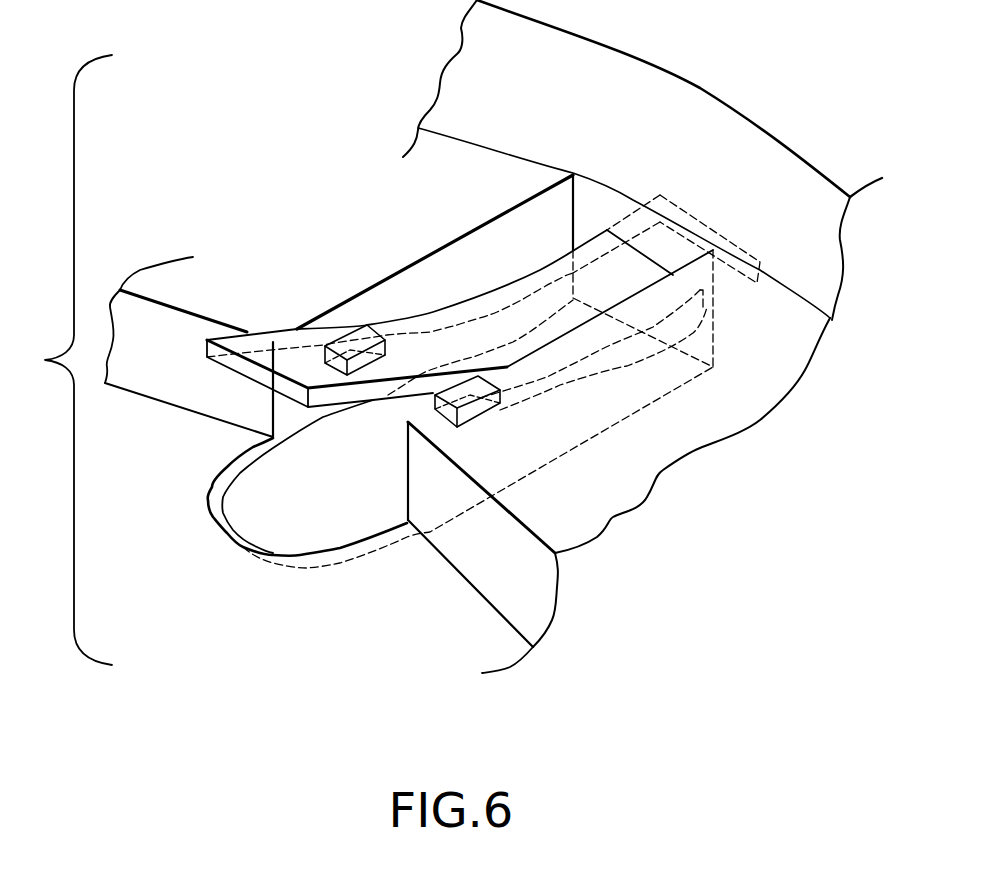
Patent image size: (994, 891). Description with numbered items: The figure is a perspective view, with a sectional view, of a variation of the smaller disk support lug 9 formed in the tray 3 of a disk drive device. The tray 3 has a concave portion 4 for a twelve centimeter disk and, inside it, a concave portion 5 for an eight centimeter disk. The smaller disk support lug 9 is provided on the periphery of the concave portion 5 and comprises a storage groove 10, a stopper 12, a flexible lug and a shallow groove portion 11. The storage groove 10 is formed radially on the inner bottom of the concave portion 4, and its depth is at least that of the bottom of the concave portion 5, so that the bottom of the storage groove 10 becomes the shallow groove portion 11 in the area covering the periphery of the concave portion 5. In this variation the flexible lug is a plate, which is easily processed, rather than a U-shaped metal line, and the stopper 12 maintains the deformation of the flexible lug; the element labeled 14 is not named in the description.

The tray 3 is at (826, 189).
The concave portion for a 12 cm disk 4 is at (700, 415).
The concave portion for an 8 cm disk 5 is at (505, 653).
The smaller disk support lug 9 is at (64, 360).
The storage groove 10 is at (420, 270).
The shallow groove portion 11 is at (287, 553).
The stopper 12 is at (367, 340).
The plate 14 is at (297, 337).